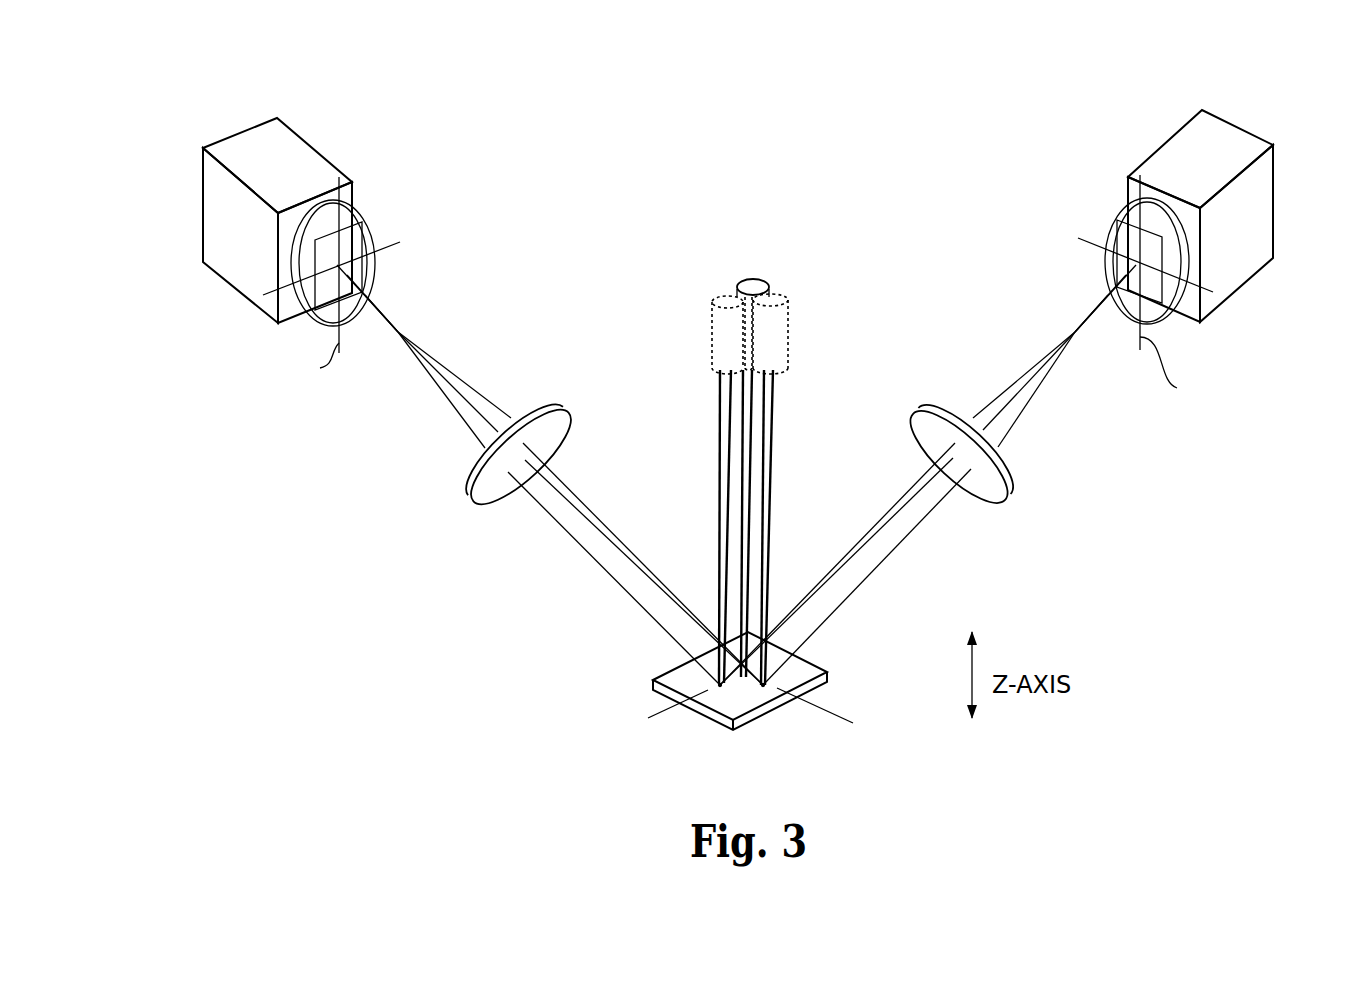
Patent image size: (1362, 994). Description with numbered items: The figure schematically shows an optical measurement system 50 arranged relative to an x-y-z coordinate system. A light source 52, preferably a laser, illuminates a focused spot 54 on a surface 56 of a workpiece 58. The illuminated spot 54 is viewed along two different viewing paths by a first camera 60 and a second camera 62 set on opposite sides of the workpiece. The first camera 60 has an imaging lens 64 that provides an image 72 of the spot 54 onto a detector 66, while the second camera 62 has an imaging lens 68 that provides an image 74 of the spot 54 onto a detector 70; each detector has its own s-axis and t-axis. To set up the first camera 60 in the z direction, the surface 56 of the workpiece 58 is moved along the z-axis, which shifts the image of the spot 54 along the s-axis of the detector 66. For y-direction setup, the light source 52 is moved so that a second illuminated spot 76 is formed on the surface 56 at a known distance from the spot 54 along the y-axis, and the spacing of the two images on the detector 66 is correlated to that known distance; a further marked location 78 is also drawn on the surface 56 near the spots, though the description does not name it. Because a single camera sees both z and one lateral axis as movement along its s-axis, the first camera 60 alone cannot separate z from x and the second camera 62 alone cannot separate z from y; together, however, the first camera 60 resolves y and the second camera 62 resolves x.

The optical measurement system 50 is at (672, 214).
The light source 52 is at (752, 279).
The illuminated spot 54 is at (717, 708).
The surface 56 is at (808, 665).
The workpiece 58 is at (756, 729).
The first camera 60 is at (258, 150).
The second camera 62 is at (1219, 136).
The imaging lens 64 is at (493, 503).
The detector 66 is at (360, 234).
The imaging lens 68 is at (1007, 477).
The detector 70 is at (1126, 236).
The image 72 is at (377, 260).
The image 74 is at (1177, 252).
The illuminated spot 76 is at (777, 692).
The detection spot 78 is at (722, 682).